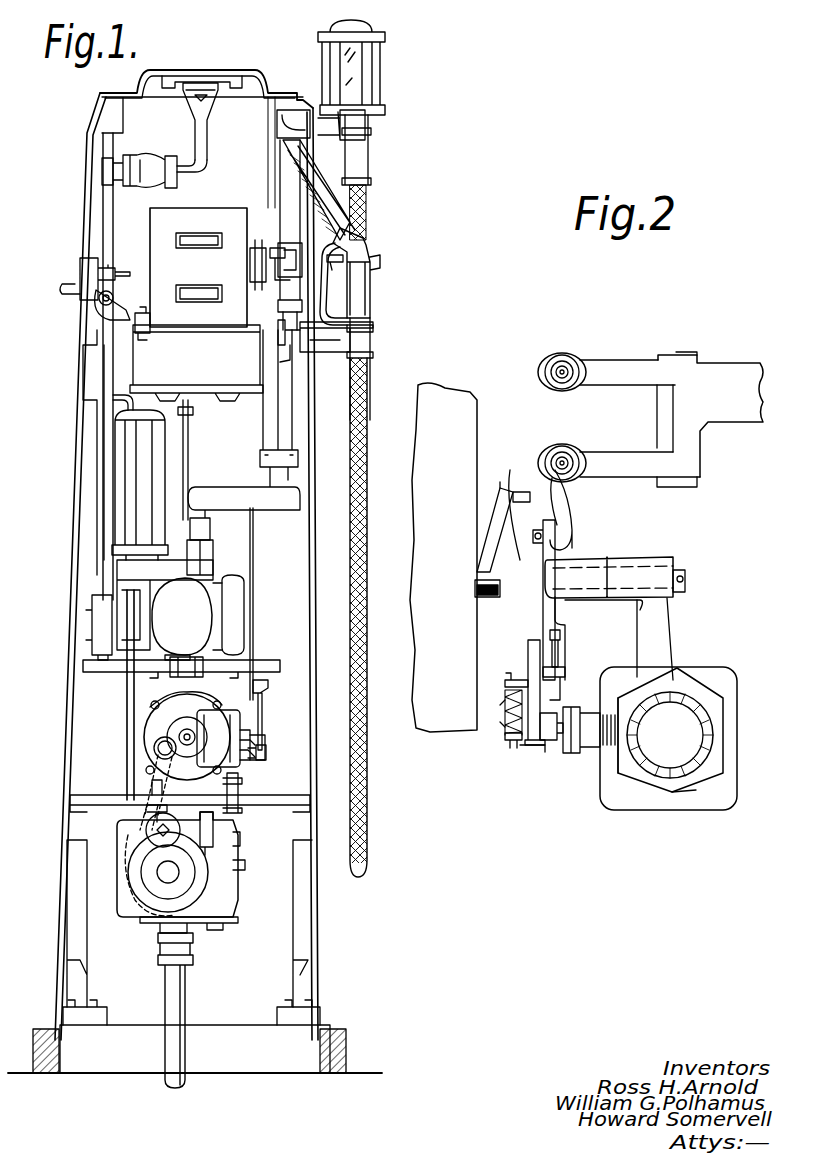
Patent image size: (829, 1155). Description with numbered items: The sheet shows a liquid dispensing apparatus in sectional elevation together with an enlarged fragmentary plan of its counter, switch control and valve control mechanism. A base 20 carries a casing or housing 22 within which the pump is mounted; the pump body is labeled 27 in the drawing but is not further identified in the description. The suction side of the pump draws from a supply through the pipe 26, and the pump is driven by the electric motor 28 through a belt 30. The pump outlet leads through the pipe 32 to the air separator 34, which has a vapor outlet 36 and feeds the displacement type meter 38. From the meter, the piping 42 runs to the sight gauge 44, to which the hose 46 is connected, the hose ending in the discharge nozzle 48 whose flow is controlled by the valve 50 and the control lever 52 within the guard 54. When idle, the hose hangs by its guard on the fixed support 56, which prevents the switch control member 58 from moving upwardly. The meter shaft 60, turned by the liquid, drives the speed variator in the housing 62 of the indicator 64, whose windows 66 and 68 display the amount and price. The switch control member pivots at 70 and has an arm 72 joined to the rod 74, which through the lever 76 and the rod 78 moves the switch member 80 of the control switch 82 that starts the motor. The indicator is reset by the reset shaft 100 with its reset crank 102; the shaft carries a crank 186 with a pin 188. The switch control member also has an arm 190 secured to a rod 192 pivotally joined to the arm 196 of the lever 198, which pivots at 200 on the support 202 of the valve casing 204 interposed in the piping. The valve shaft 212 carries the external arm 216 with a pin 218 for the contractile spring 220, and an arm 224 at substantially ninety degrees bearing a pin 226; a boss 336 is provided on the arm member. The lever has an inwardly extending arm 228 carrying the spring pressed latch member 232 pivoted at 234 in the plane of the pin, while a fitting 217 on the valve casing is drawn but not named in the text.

In FIG. 1, the base 20 is at (348, 1040).
In FIG. 1, the casing or housing 22 is at (325, 935).
In FIG. 1, the pipe 26 is at (185, 985).
In FIG. 1, the pump 27 is at (217, 890).
In FIG. 1, the electric motor 28 is at (155, 725).
In FIG. 1, the belt 30 is at (140, 828).
In FIG. 1, the pipe 32 is at (130, 764).
In FIG. 1, the air separator 34 is at (125, 467).
In FIG. 1, the vapor outlet 36 is at (98, 350).
In FIG. 1, the meter 38 is at (100, 608).
In FIG. 2, the piping 42 is at (690, 700).
In FIG. 1, the sight gauge 44 is at (385, 92).
In FIG. 1, the hose 46 is at (360, 195).
In FIG. 1, the discharge nozzle 48 is at (368, 288).
In FIG. 1, the valve 50 is at (355, 250).
In FIG. 1, the control lever 52 is at (338, 308).
In FIG. 1, the guard 54 is at (342, 295).
In FIG. 1, the fixed support 56 is at (330, 350).
In FIG. 1, the switch control member 58 is at (338, 353).
In FIG. 2, the switch control member 58 is at (710, 402).
In FIG. 1, the meter shaft 60 is at (185, 447).
In FIG. 1, the housing 62 is at (160, 358).
In FIG. 1, the indicator 64 is at (133, 250).
In FIG. 1, the window 66 is at (175, 282).
In FIG. 1, the window 68 is at (205, 232).
In FIG. 1, the pivot 70 is at (155, 580).
In FIG. 2, the pivot 70 is at (690, 360).
In FIG. 1, the inwardly extending arm 72 is at (207, 533).
In FIG. 2, the inwardly extending arm 72 is at (606, 348).
In FIG. 1, the rod 74 is at (267, 604).
In FIG. 2, the rod 74 is at (564, 370).
In FIG. 1, the lever 76 is at (268, 686).
In FIG. 1, the rod 78 is at (265, 724).
In FIG. 1, the switch member 80 is at (320, 764).
In FIG. 1, the control switch 82 is at (220, 753).
In FIG. 1, the reset shaft 100 is at (95, 262).
In FIG. 2, the reset shaft 100 is at (498, 565).
In FIG. 1, the reset crank 102 is at (80, 278).
In FIG. 1, the crank 186 is at (258, 240).
In FIG. 2, the crank 186 is at (512, 450).
In FIG. 2, the pin 188 is at (560, 440).
In FIG. 2, the arm 190 is at (615, 462).
In FIG. 2, the rod 192 is at (574, 503).
In FIG. 2, the arm 196 is at (553, 562).
In FIG. 2, the lever 198 is at (588, 562).
In FIG. 2, the pivot 200 is at (688, 580).
In FIG. 2, the support 202 is at (672, 640).
In FIG. 1, the valve casing 204 is at (265, 248).
In FIG. 2, the valve casing 204 is at (684, 772).
In FIG. 2, the shaft 212 is at (548, 748).
In FIG. 2, the external arm 216 is at (528, 742).
In FIG. 2, the nut 217 is at (585, 750).
In FIG. 2, the pin 218 is at (522, 684).
In FIG. 2, the contractile spring 220 is at (500, 745).
In FIG. 2, the arm 224 is at (521, 650).
In FIG. 2, the pin 226 is at (550, 725).
In FIG. 2, the inwardly extending arm 228 is at (566, 632).
In FIG. 2, the latch member 232 is at (575, 692).
In FIG. 2, the pivot 234 is at (571, 672).
In FIG. 2, the boss 336 is at (528, 755).